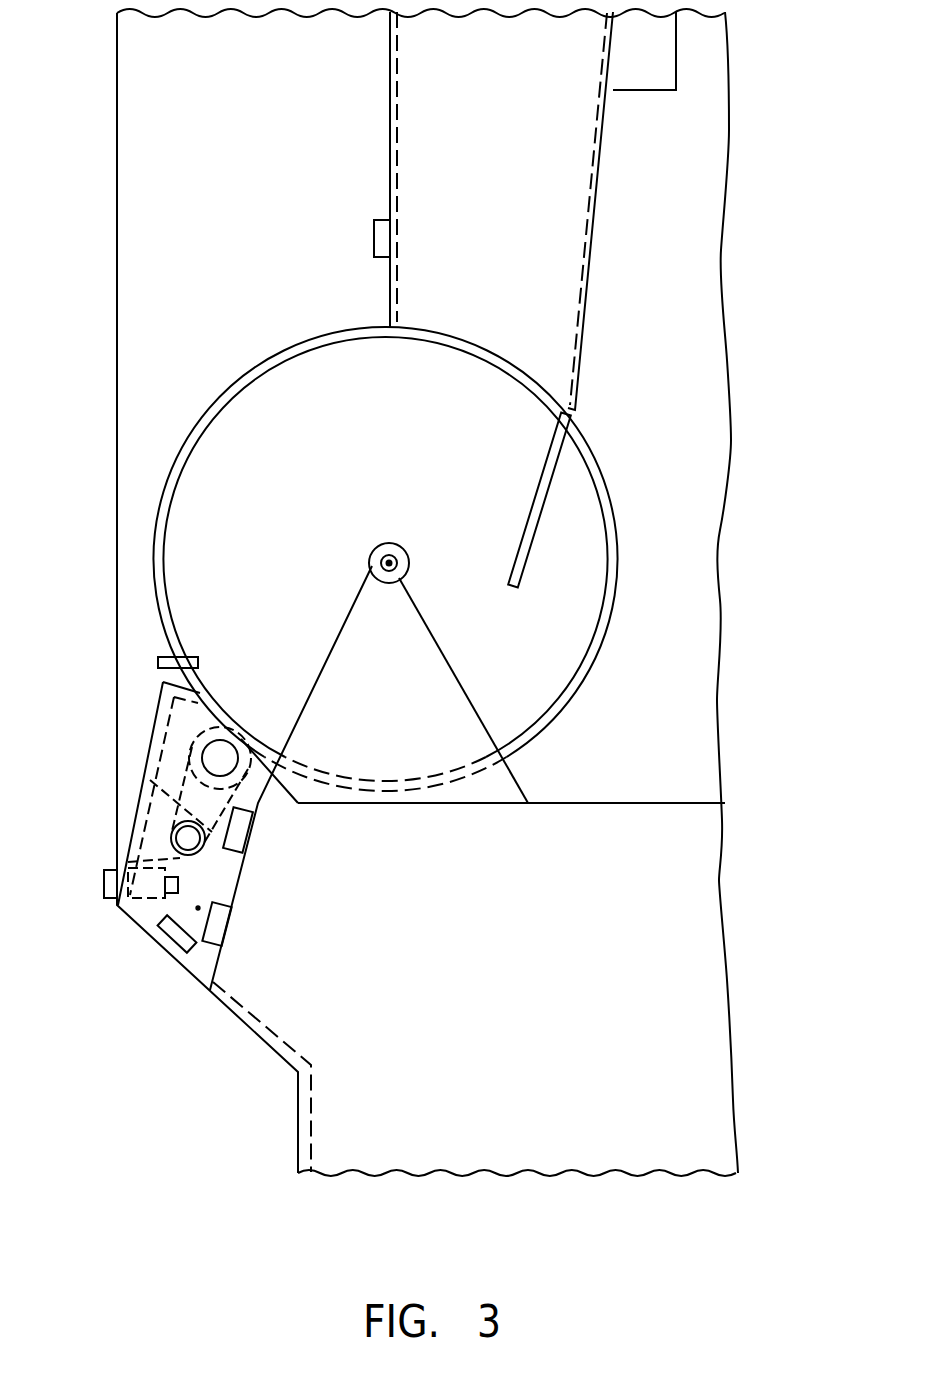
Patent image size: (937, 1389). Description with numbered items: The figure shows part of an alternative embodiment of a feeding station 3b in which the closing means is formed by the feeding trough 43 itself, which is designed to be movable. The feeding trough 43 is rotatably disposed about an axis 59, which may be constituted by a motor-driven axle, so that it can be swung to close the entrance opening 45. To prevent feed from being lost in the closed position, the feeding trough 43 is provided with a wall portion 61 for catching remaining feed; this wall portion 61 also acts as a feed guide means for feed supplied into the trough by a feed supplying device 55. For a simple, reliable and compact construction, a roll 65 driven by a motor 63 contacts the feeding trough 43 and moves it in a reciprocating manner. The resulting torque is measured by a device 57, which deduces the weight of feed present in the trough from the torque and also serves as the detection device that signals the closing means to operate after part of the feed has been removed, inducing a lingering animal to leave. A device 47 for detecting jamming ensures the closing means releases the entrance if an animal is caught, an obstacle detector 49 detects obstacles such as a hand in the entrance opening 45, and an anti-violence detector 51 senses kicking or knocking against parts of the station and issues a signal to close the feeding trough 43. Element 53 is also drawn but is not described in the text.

The feeding station 3b is at (623, 578).
The feeding trough 43 is at (568, 690).
The entrance opening 45 is at (235, 392).
The device for detecting jamming 47 is at (238, 832).
The obstacle detector 49 is at (378, 238).
The anti-violence detector 51 is at (217, 923).
The bottom block 53 is at (177, 933).
The feed supplying device 55 is at (562, 187).
The detection device 57 is at (158, 805).
The axis 59 is at (389, 563).
The wall portion 61 is at (537, 517).
The motor 63 is at (198, 850).
The roll 65 is at (242, 772).